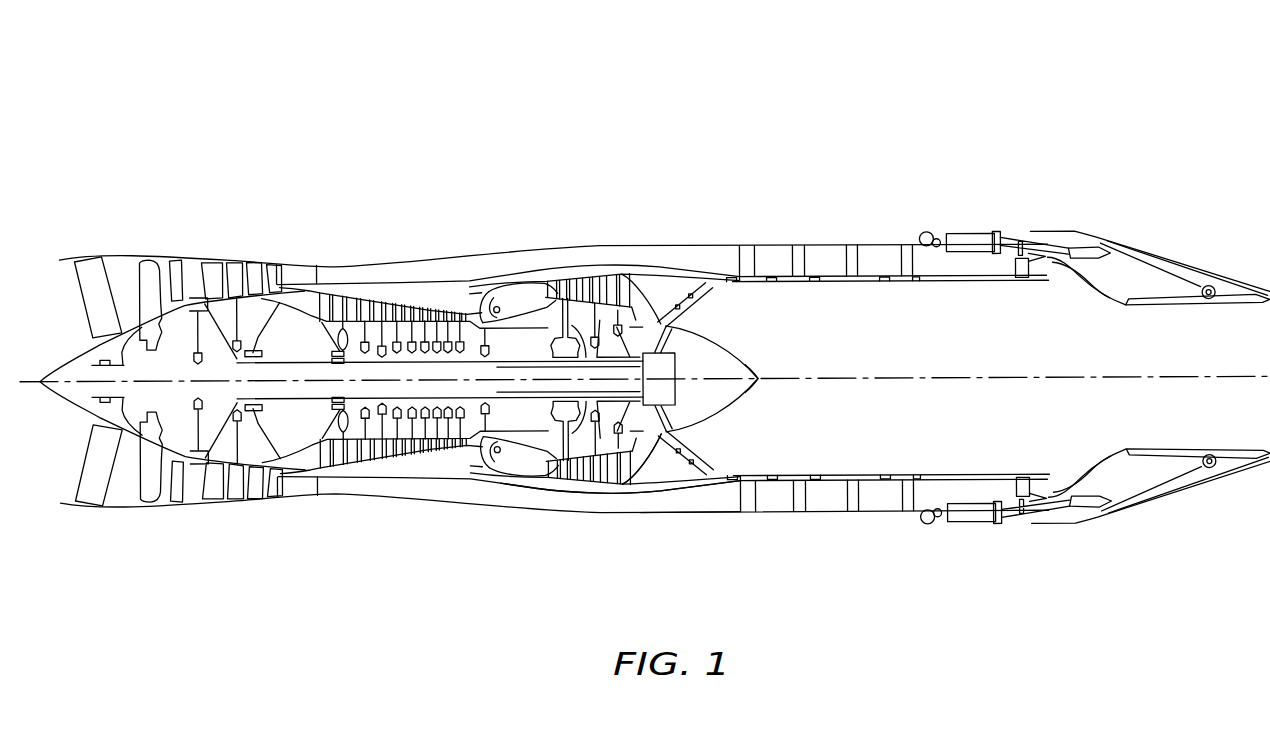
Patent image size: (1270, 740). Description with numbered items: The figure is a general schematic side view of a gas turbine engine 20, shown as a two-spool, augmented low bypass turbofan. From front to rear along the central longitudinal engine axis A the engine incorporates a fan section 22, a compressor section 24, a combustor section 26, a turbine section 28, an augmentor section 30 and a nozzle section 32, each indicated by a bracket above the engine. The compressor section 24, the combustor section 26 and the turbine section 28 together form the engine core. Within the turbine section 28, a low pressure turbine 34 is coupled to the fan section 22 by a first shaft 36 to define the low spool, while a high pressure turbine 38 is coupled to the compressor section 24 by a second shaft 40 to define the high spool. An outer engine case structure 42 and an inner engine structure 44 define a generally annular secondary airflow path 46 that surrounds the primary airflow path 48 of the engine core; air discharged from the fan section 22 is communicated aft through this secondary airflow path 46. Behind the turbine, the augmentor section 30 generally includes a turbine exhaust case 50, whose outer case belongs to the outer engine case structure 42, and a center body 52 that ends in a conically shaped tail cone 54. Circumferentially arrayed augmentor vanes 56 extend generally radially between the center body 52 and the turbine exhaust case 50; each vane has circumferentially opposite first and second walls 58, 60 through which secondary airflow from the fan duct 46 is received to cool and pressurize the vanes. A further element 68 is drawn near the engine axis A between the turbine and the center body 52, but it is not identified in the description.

The gas turbine engine 20 is at (749, 84).
The fan section 22 is at (275, 186).
The compressor section 24 is at (490, 186).
The combustor section 26 is at (560, 186).
The turbine section 28 is at (637, 186).
The augmentor section 30 is at (768, 186).
The nozzle section 32 is at (1269, 171).
The low pressure turbine 34 is at (603, 487).
The first shaft 36 is at (282, 394).
The high pressure turbine 38 is at (523, 452).
The second shaft 40 is at (497, 446).
The outer engine case structure 42 is at (298, 496).
The inner engine structure 44 is at (403, 486).
The secondary airflow path 46 is at (350, 488).
The primary airflow path 48 is at (260, 492).
The turbine exhaust case 50 is at (648, 513).
The center body 52 is at (706, 422).
The tail cone 54 is at (757, 371).
The augmentor vanes 56 is at (702, 308).
The first wall 58 is at (667, 476).
The second wall 60 is at (710, 454).
The bearing compartment 68 is at (670, 370).
The central longitudinal engine axis A is at (1043, 378).